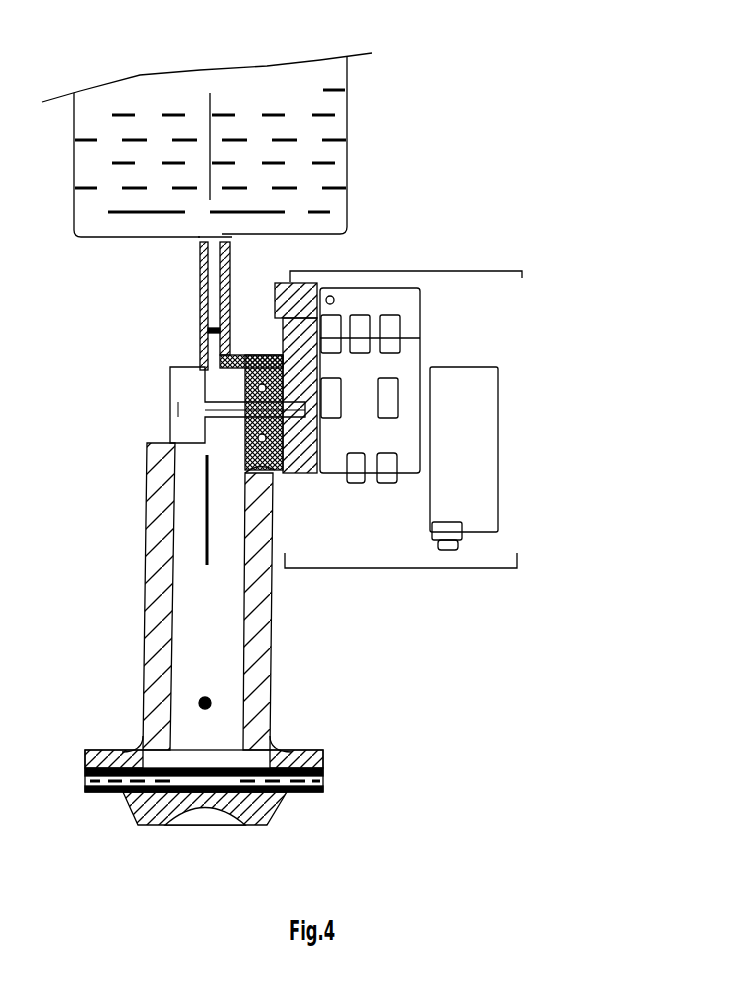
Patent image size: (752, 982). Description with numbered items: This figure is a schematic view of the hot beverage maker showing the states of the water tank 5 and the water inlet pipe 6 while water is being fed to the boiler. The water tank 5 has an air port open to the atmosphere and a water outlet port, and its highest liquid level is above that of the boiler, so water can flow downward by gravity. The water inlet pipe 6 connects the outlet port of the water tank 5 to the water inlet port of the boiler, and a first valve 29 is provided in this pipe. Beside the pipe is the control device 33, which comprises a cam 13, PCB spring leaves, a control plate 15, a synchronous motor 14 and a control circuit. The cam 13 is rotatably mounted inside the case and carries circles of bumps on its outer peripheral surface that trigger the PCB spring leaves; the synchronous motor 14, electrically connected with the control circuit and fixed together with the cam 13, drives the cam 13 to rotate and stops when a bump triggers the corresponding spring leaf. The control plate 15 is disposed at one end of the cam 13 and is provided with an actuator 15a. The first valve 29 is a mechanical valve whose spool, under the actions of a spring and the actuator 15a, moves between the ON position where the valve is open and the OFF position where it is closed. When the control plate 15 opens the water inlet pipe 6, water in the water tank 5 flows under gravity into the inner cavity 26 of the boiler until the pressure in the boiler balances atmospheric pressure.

The water tank 5 is at (347, 105).
The water inlet pipe 6 is at (207, 388).
The first valve 29 is at (172, 403).
The actuator 15a is at (230, 432).
The control plate 15 is at (323, 290).
The cam 13 is at (403, 367).
The synchronous motor 14 is at (478, 432).
The control device 33 is at (400, 568).
The inner cavity 26 is at (190, 622).